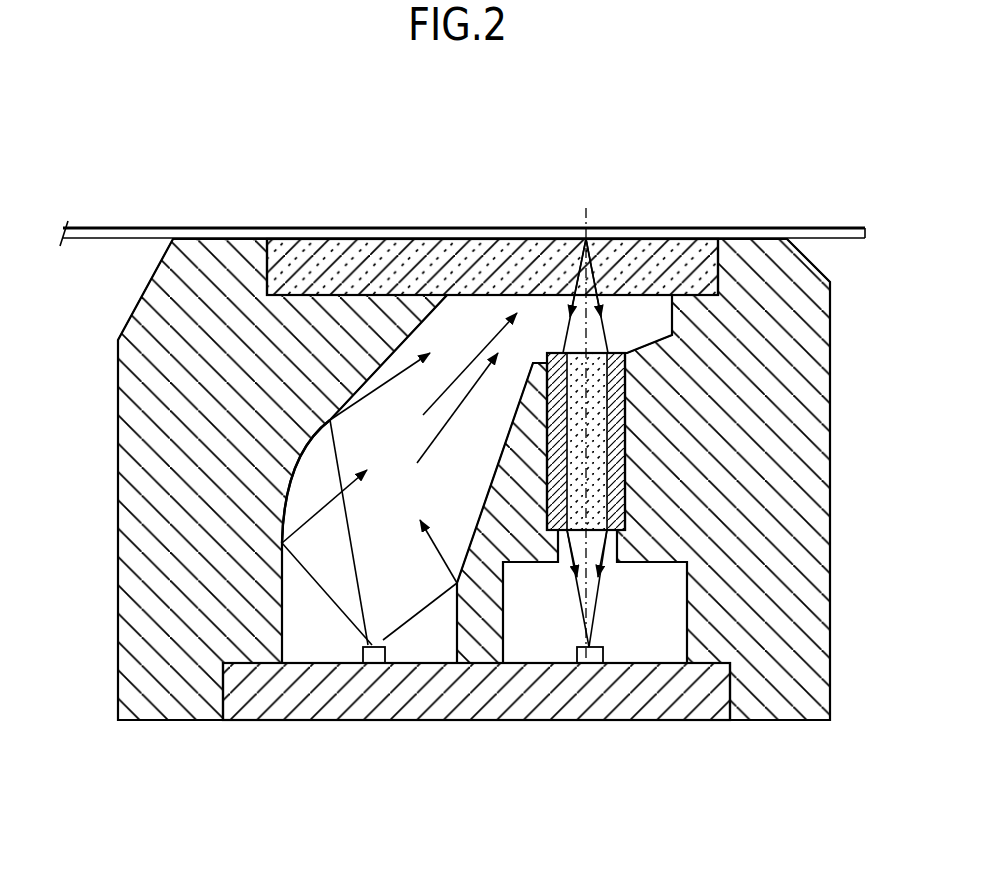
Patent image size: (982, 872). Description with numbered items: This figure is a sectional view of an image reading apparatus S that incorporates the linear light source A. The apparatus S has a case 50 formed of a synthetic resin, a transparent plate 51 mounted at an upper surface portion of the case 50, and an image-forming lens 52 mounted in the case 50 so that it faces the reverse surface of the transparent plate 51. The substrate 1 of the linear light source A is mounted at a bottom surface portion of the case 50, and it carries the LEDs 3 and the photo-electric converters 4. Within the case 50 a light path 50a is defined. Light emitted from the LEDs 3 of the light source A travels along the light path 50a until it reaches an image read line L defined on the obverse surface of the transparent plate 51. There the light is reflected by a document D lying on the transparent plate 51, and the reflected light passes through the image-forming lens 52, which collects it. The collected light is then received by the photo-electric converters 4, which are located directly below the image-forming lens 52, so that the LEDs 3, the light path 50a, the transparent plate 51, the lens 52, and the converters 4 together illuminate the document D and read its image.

The substrate 1 is at (523, 690).
The LED 3 is at (377, 663).
The photo-electric converter 4 is at (592, 663).
The case 50 is at (798, 405).
The light path 50a is at (305, 492).
The transparent plate 51 is at (697, 247).
The image-forming lens 52 is at (592, 470).
The document D is at (455, 228).
The image read line L is at (587, 230).
The image reading apparatus S is at (165, 177).
The linear light source A is at (372, 733).